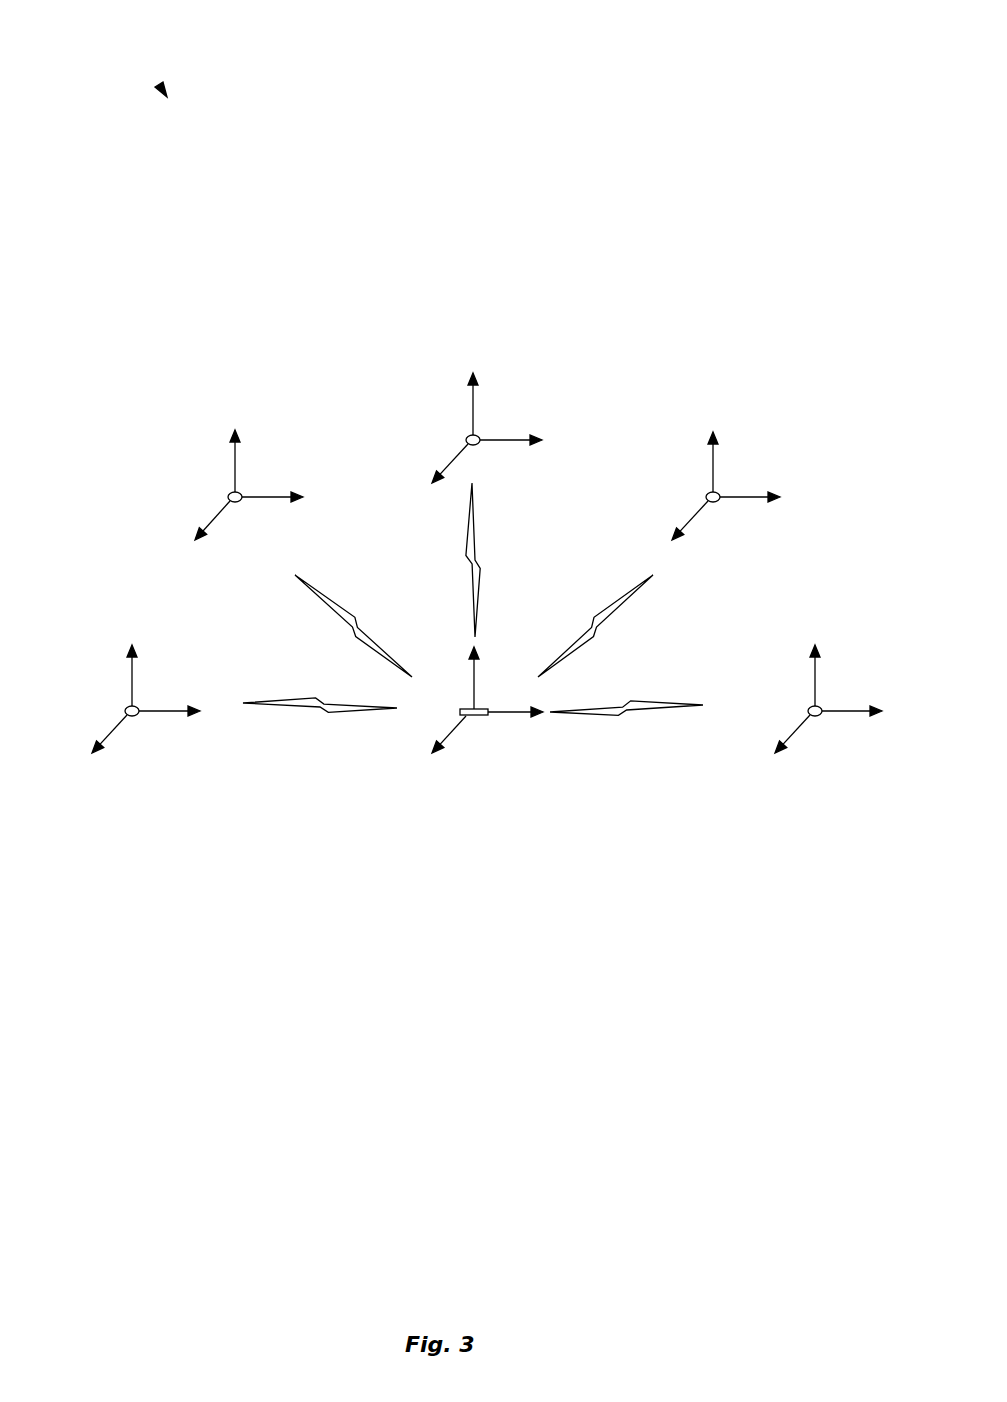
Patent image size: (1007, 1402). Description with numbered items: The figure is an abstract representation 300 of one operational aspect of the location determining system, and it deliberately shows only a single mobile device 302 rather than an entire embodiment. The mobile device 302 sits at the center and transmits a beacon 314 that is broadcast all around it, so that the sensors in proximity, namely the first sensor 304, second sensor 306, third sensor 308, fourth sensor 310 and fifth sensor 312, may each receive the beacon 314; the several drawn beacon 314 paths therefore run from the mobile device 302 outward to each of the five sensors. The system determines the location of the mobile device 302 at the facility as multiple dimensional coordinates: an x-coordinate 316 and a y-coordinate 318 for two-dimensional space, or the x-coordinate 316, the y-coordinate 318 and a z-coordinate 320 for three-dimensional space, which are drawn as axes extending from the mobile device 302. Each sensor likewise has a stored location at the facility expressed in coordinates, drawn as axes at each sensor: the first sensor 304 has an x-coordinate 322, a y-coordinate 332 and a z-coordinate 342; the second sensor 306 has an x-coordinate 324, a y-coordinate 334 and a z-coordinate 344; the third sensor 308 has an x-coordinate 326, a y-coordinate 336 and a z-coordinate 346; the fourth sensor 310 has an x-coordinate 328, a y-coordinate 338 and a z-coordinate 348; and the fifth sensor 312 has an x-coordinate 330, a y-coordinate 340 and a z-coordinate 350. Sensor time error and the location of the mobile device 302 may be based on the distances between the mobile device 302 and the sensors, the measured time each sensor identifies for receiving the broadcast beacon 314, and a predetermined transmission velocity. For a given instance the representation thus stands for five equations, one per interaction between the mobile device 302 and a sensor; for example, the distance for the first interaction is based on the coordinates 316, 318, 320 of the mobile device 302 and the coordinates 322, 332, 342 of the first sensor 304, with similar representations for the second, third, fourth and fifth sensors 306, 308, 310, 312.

The abstract representation 300 is at (160, 83).
The mobile device 302 is at (460, 714).
The first sensor 304 is at (127, 715).
The second sensor 306 is at (229, 501).
The third sensor 308 is at (467, 445).
The fourth sensor 310 is at (707, 500).
The fifth sensor 312 is at (810, 715).
The beacon 314 is at (356, 637).
The x-coordinate 316 is at (508, 713).
The y-coordinate 318 is at (470, 675).
The z-coordinate 320 is at (453, 733).
The x-coordinate 322 is at (167, 713).
The x-coordinate 324 is at (270, 498).
The x-coordinate 326 is at (507, 442).
The x-coordinate 328 is at (747, 500).
The x-coordinate 330 is at (850, 713).
The y-coordinate 332 is at (132, 673).
The y-coordinate 334 is at (235, 458).
The y-coordinate 336 is at (472, 402).
The y-coordinate 338 is at (710, 460).
The y-coordinate 340 is at (815, 673).
The z-coordinate 342 is at (115, 728).
The z-coordinate 344 is at (218, 515).
The z-coordinate 346 is at (448, 470).
The z-coordinate 348 is at (688, 525).
The z-coordinate 350 is at (790, 735).